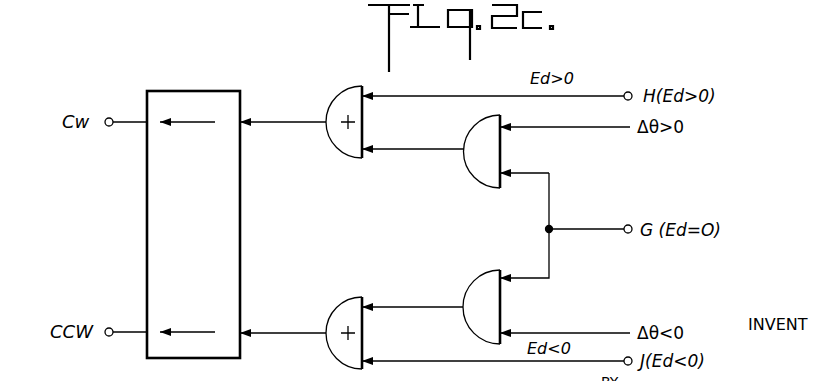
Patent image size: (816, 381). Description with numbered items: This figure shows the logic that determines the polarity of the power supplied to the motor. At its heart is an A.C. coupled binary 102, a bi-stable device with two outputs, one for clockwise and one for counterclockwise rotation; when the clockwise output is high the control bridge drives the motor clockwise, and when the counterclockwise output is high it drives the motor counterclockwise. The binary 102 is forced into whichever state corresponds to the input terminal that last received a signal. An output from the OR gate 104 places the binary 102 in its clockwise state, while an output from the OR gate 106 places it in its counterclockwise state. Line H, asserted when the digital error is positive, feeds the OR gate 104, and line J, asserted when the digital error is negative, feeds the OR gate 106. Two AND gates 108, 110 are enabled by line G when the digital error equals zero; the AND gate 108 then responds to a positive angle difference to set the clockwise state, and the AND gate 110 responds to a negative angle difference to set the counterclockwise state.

The A.C. coupled binary 102 is at (199, 90).
The OR gate 104 is at (346, 103).
The OR gate 106 is at (346, 313).
The AND gate 108 is at (483, 160).
The AND gate 110 is at (480, 287).